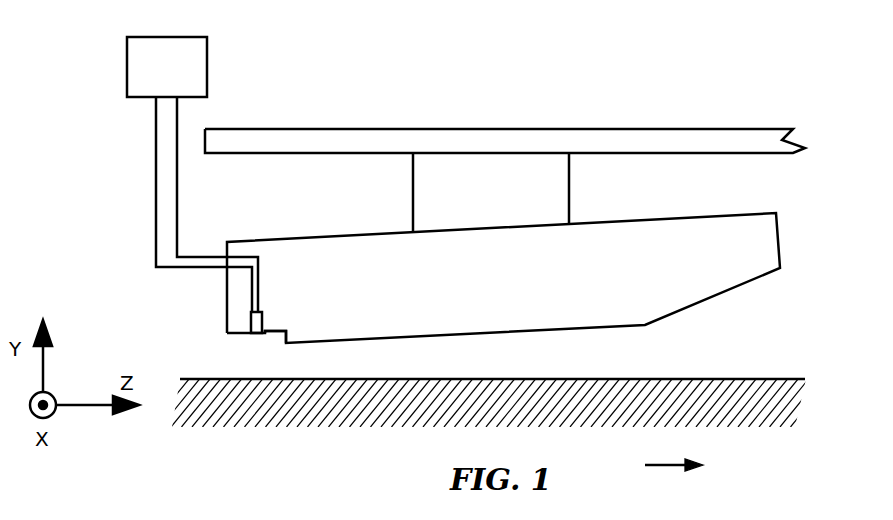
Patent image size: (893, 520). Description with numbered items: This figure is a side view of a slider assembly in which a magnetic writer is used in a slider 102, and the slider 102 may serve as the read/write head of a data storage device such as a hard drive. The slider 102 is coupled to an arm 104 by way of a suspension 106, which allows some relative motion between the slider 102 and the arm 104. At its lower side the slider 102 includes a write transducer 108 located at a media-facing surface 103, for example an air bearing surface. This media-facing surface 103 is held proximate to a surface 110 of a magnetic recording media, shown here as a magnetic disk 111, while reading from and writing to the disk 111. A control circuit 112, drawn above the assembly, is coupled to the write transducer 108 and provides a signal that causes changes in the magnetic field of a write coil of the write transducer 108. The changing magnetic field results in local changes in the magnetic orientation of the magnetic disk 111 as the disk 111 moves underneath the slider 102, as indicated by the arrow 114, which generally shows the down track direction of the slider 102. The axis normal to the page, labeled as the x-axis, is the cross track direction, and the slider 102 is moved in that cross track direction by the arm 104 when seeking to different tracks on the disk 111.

The slider 102 is at (685, 223).
The media-facing surface 103 is at (270, 329).
The arm 104 is at (730, 135).
The suspension 106 is at (567, 187).
The write transducer 108 is at (252, 318).
The surface 110 is at (687, 378).
The magnetic disk 111 is at (700, 417).
The control circuit 112 is at (177, 36).
The arrow 114 is at (673, 467).